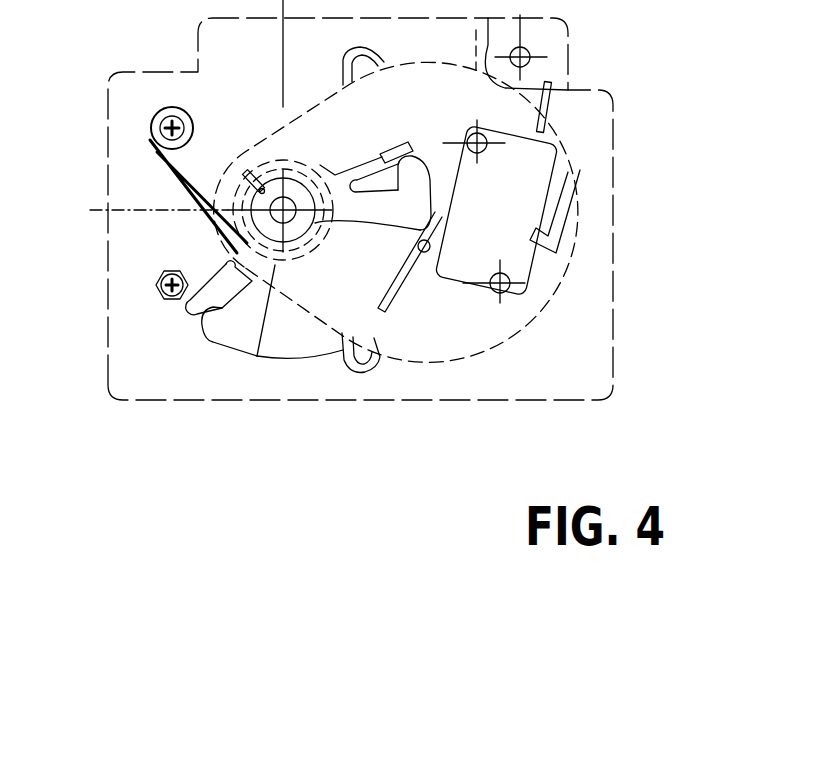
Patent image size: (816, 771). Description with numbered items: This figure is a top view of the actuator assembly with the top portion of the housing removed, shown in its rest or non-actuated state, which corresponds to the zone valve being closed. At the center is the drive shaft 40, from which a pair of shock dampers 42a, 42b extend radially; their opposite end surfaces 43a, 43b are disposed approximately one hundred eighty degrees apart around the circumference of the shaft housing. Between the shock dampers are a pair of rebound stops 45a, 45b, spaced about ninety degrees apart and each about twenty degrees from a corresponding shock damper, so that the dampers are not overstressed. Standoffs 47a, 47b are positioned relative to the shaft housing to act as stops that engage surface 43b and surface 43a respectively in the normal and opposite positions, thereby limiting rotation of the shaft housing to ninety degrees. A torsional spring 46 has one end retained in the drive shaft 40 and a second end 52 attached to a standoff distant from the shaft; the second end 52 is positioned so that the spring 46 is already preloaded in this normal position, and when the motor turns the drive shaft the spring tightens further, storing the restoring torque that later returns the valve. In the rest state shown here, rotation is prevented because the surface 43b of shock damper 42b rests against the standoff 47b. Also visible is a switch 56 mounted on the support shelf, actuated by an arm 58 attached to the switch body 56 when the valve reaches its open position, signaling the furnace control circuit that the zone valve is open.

The drive shaft 40 is at (296, 185).
The shock damper 42a is at (400, 175).
The shock damper 42b is at (213, 333).
The end surface 43a is at (400, 143).
The end surface 43b is at (188, 287).
The rebound stop 45a is at (406, 207).
The rebound stop 45b is at (257, 353).
The torsional spring 46 is at (272, 156).
The standoff 47a is at (170, 106).
The standoff 47b is at (157, 291).
The second end 52 is at (182, 181).
The switch 56 is at (536, 192).
The arm 58 is at (407, 283).